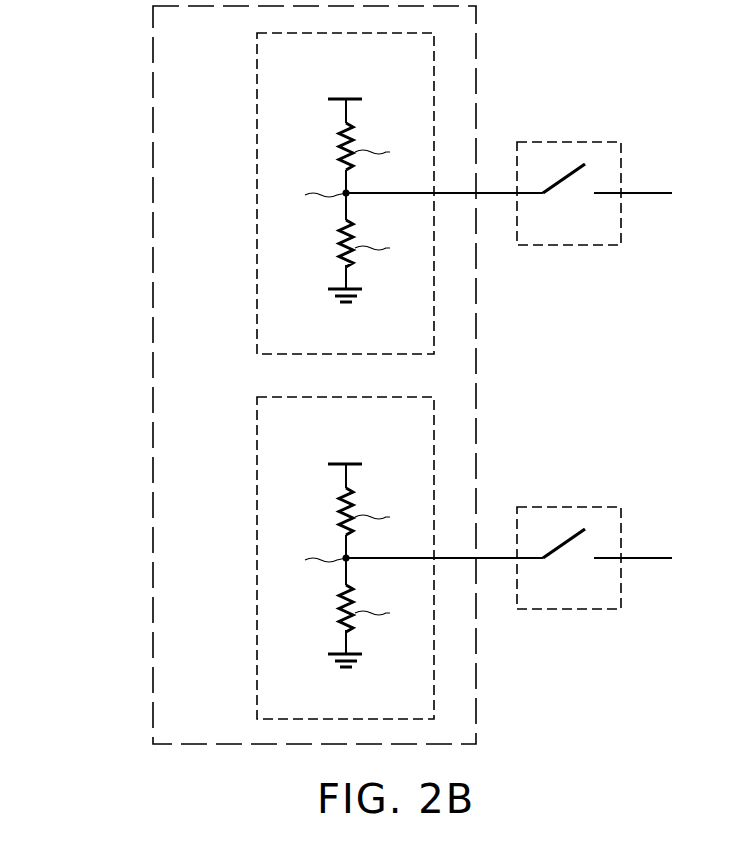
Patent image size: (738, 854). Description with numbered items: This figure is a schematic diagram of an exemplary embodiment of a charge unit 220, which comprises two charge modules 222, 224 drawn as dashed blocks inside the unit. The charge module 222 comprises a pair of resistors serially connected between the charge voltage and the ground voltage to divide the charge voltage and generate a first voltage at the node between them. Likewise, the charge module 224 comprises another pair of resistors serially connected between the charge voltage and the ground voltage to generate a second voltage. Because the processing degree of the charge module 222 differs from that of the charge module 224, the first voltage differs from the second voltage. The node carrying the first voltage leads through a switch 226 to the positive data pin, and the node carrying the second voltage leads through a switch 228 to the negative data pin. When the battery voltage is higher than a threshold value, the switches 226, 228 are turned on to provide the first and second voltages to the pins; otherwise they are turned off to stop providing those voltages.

The charge unit 220 is at (153, 377).
The charge module 222 is at (257, 193).
The charge module 224 is at (257, 558).
The switch 226 is at (567, 142).
The switch 228 is at (570, 609).